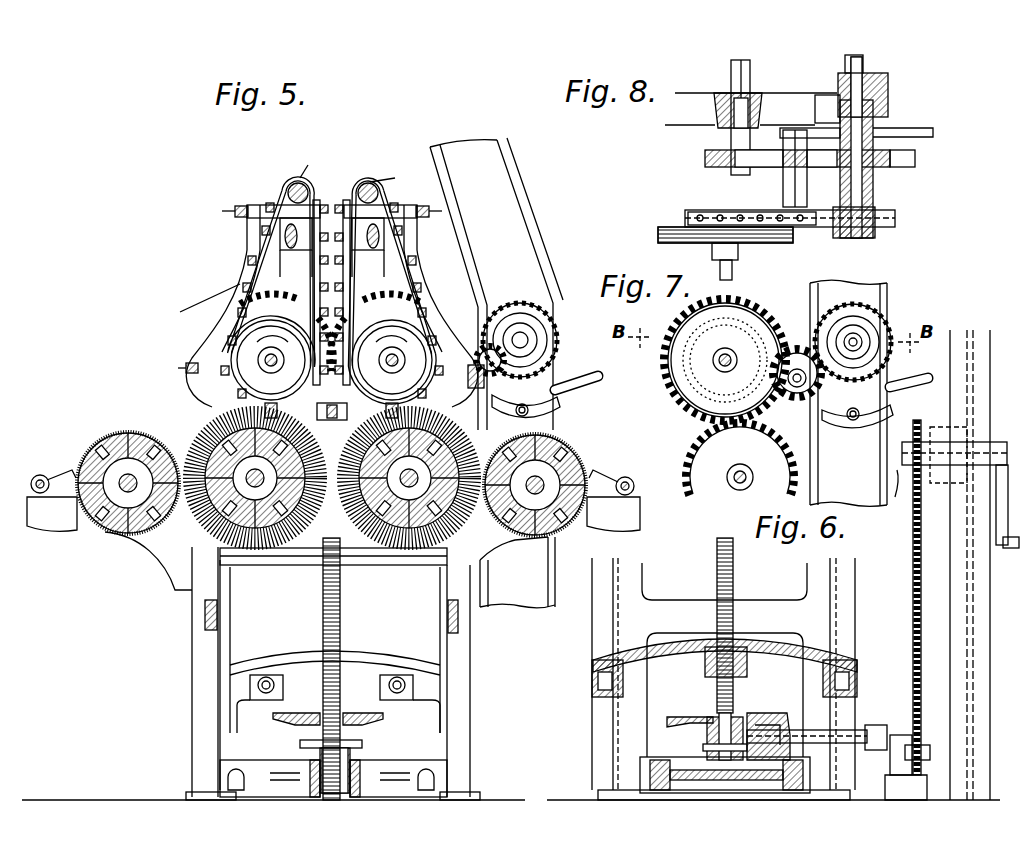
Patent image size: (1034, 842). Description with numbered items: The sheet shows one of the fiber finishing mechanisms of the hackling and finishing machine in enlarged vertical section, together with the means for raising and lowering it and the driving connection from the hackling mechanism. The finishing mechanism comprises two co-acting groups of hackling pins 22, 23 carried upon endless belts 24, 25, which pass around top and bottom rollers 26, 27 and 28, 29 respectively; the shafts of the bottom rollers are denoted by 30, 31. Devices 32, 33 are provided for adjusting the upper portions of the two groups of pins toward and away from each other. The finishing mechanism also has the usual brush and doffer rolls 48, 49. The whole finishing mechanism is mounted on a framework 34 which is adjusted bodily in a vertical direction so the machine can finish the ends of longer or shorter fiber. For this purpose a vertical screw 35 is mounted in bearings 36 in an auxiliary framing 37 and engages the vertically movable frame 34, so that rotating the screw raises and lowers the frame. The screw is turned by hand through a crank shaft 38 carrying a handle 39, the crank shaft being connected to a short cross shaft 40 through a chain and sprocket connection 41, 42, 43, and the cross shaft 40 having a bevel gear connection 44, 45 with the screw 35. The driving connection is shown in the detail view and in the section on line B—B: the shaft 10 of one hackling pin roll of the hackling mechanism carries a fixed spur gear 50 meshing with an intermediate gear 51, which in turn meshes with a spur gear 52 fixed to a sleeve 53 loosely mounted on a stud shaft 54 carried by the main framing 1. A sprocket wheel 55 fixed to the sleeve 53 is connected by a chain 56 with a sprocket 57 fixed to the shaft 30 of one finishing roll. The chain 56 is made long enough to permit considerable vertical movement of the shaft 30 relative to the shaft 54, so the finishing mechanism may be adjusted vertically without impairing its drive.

In FIG. 5, the main framing 1 is at (496, 373).
In FIG. 8, the main framing 1 is at (752, 109).
In FIG. 7, the main framing 1 is at (848, 393).
In FIG. 8, the shaft of bottom roller 10 is at (748, 80).
In FIG. 5, the hackling pins 22 is at (420, 288).
In FIG. 5, the hackling pins 23 is at (194, 304).
In FIG. 5, the endless belt 24 is at (350, 274).
In FIG. 5, the endless belt 25 is at (256, 271).
In FIG. 5, the top roller 26 is at (388, 185).
In FIG. 5, the bottom roller 27 is at (397, 366).
In FIG. 5, the top roller 28 is at (306, 175).
In FIG. 5, the bottom roller 29 is at (247, 352).
In FIG. 5, the shaft of bottom roller 30 is at (386, 366).
In FIG. 8, the shaft of bottom roller 30 is at (732, 270).
In FIG. 7, the shaft of bottom roller 30 is at (718, 362).
In FIG. 5, the shaft of bottom roller 31 is at (266, 366).
In FIG. 5, the adjusting device 32 is at (430, 212).
In FIG. 5, the adjusting device 33 is at (233, 210).
In FIG. 5, the framework 34 is at (232, 663).
In FIG. 6, the framework 34 is at (600, 642).
In FIG. 5, the vertical screw 35 is at (345, 669).
In FIG. 6, the vertical screw 35 is at (718, 580).
In FIG. 5, the bearings 36 is at (352, 752).
In FIG. 6, the bearings 36 is at (708, 752).
In FIG. 5, the auxiliary framing 37 is at (460, 748).
In FIG. 6, the auxiliary framing 37 is at (723, 674).
In FIG. 6, the crank shaft 38 is at (895, 497).
In FIG. 6, the handle 39 is at (1002, 549).
In FIG. 6, the cross shaft 40 is at (855, 744).
In FIG. 6, the chain and sprocket connection 41 is at (913, 648).
In FIG. 6, the chain and sprocket connection 42 is at (916, 425).
In FIG. 6, the chain and sprocket connection 43 is at (918, 762).
In FIG. 6, the bevel gear 44 is at (785, 715).
In FIG. 5, the bevel gear 45 is at (285, 722).
In FIG. 6, the bevel gear 45 is at (688, 718).
In FIG. 5, the brush roll 48 is at (270, 552).
In FIG. 5, the doffer roll 49 is at (132, 532).
In FIG. 8, the spur gear 50 is at (708, 155).
In FIG. 7, the spur gear 50 is at (735, 313).
In FIG. 5, the intermediate gear 51 is at (526, 362).
In FIG. 8, the intermediate gear 51 is at (790, 160).
In FIG. 7, the intermediate gear 51 is at (812, 420).
In FIG. 8, the spur gear 52 is at (893, 160).
In FIG. 8, the sleeve 53 is at (873, 185).
In FIG. 8, the stud shaft 54 is at (883, 100).
In FIG. 7, the stud shaft 54 is at (856, 340).
In FIG. 5, the sprocket wheel 55 is at (550, 352).
In FIG. 8, the sprocket wheel 55 is at (875, 214).
In FIG. 7, the sprocket wheel 55 is at (868, 318).
In FIG. 5, the chain 56 is at (522, 306).
In FIG. 8, the chain 56 is at (802, 226).
In FIG. 7, the chain 56 is at (803, 345).
In FIG. 8, the sprocket 57 is at (712, 206).